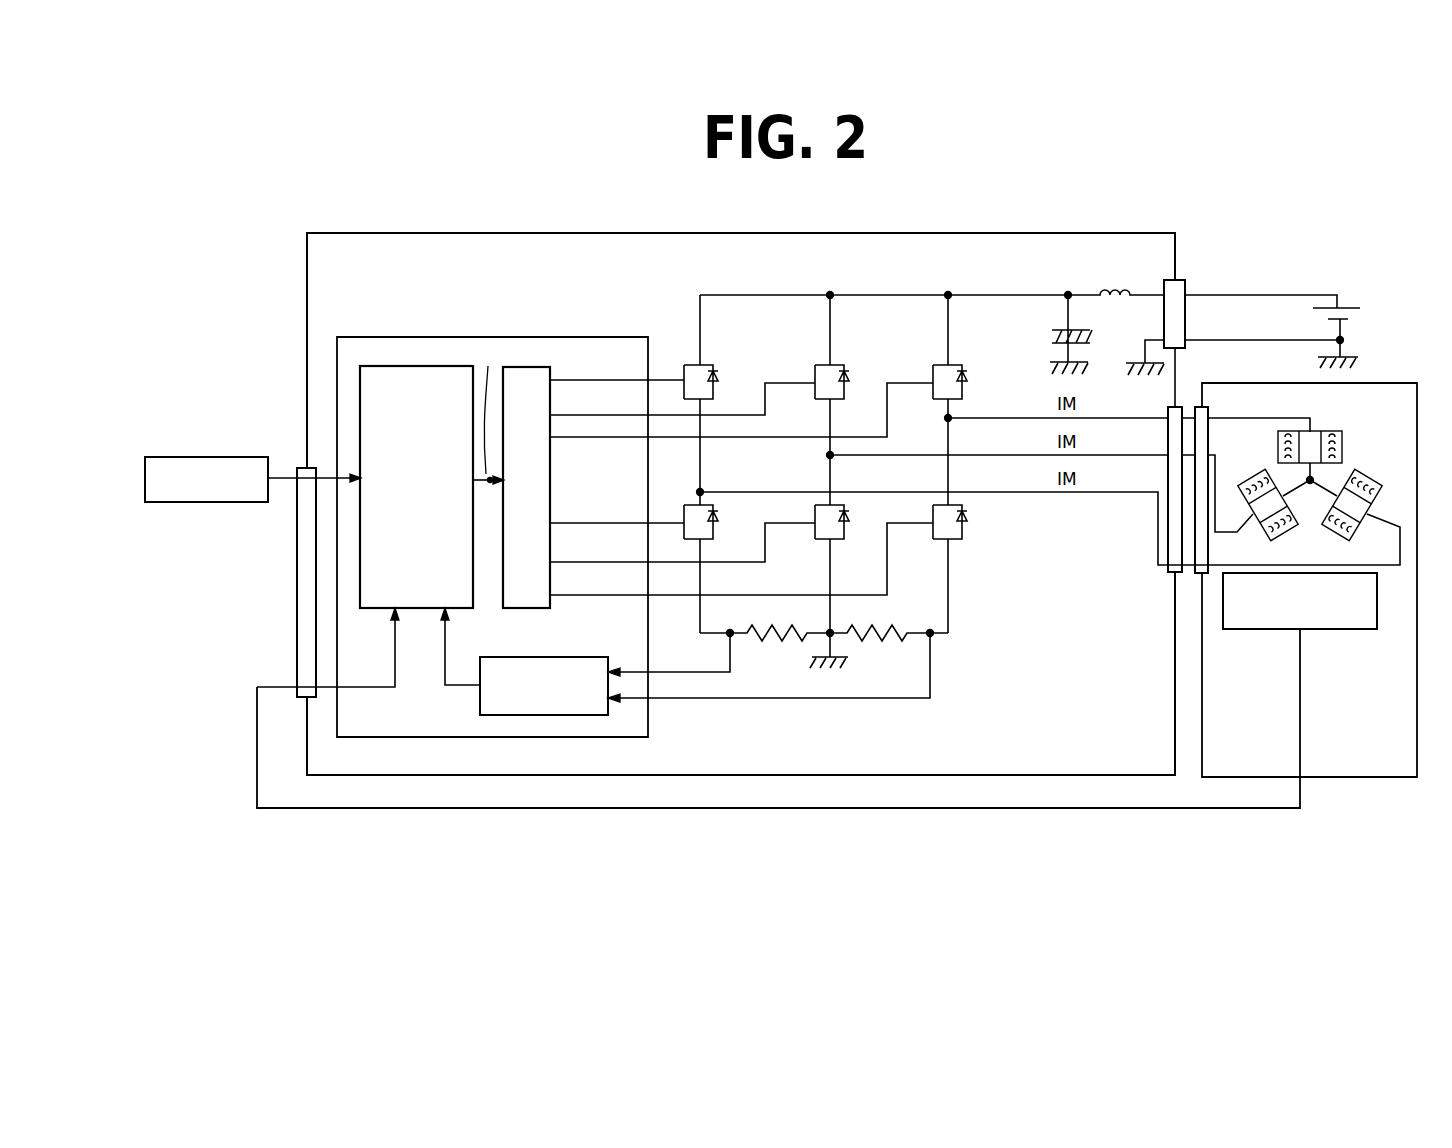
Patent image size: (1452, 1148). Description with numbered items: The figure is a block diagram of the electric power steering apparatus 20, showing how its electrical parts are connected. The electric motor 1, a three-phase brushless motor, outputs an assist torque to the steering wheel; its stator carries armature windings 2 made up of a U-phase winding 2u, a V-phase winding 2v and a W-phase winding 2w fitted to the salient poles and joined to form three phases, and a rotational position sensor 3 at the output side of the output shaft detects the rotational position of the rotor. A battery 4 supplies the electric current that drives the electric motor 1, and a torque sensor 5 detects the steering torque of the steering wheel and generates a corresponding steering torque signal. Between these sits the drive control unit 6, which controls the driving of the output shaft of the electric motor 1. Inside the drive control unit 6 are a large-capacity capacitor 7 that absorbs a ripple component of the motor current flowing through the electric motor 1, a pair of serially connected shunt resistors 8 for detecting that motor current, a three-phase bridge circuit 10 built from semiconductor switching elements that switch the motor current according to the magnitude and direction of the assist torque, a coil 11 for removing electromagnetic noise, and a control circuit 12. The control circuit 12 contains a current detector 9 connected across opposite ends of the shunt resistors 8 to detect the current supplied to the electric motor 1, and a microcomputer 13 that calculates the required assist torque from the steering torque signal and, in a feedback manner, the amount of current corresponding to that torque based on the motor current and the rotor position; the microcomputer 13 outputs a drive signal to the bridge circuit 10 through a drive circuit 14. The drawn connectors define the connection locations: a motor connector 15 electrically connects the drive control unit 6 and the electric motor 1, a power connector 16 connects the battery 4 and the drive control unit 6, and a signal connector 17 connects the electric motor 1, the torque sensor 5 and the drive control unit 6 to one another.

The electric motor 1 is at (1326, 778).
The armature windings 2 is at (1325, 475).
The U-phase armature winding 2u is at (1342, 446).
The V-phase armature winding 2v is at (1368, 477).
The W-phase armature winding 2w is at (1286, 531).
The rotational position sensor 3 is at (1334, 630).
The battery 4 is at (1358, 318).
The torque sensor 5 is at (203, 502).
The drive control unit 6 is at (778, 775).
The large-capacity capacitor 7 is at (1053, 338).
The shunt resistors 8 is at (768, 643).
The current detector 9 is at (544, 715).
The three-phase bridge circuit 10 is at (790, 295).
The coil 11 is at (1109, 287).
The control circuit 12 is at (395, 737).
The microcomputer 13 is at (417, 366).
The drive circuit 14 is at (523, 367).
The motor connector 15 is at (1174, 572).
The power connector 16 is at (1185, 284).
The signal connector 17 is at (297, 640).
The electric power steering apparatus 20 is at (254, 339).